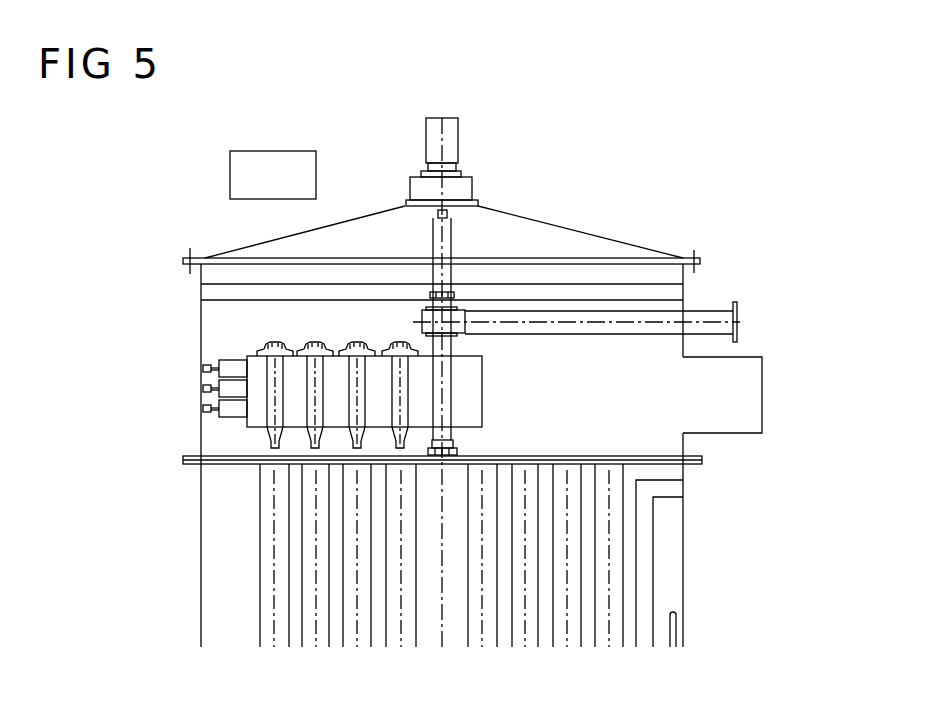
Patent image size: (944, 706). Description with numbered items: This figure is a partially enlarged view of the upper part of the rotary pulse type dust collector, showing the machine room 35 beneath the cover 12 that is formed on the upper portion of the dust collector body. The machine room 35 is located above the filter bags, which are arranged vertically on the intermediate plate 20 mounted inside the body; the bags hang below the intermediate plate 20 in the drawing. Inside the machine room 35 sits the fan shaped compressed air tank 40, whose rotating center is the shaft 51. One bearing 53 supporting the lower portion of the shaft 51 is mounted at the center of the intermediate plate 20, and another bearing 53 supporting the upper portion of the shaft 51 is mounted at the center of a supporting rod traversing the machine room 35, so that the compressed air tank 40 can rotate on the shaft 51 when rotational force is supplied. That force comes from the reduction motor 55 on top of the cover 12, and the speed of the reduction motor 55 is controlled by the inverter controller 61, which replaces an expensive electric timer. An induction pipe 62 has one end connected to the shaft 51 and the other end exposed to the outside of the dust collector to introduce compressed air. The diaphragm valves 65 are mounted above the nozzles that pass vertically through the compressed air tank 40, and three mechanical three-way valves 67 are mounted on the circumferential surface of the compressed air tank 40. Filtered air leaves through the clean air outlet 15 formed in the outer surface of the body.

The cover 12 is at (598, 249).
The clean air outlet 15 is at (745, 368).
The intermediate plate 20 is at (703, 460).
The machine room 35 is at (667, 445).
The compressed air tank 40 is at (473, 413).
The shaft 51 is at (442, 367).
The bearing 53 is at (453, 287).
The reduction motor 55 is at (458, 163).
The inverter controller 61 is at (245, 170).
The induction pipe 62 is at (713, 317).
The diaphragm valves 65 is at (250, 345).
The mechanical 3-way valves 67 is at (232, 389).